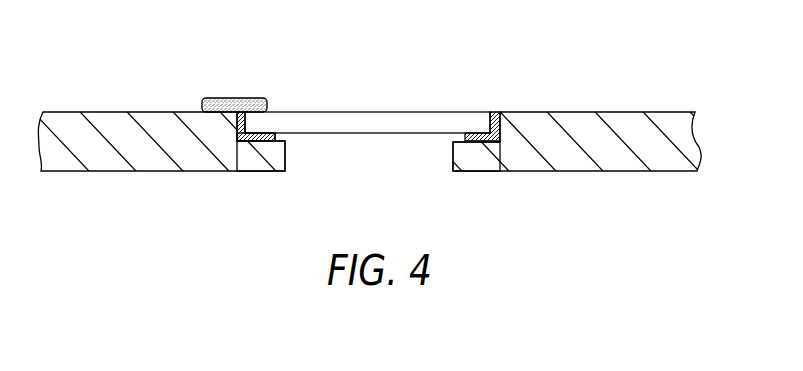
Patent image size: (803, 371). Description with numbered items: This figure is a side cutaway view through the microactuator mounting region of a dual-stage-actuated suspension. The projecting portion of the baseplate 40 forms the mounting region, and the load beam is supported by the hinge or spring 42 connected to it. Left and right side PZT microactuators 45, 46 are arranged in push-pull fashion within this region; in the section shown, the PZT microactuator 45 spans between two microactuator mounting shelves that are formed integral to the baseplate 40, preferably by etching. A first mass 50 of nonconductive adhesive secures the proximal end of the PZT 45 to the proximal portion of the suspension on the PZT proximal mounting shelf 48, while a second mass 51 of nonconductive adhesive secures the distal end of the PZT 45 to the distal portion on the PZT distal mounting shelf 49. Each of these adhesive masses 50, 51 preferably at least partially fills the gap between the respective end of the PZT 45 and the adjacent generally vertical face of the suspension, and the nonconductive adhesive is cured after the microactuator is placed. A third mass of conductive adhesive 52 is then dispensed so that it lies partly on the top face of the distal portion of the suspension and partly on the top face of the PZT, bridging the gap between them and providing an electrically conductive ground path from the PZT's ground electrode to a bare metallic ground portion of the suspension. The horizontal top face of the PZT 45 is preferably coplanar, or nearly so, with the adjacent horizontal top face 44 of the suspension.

The baseplate 40 is at (606, 88).
The hinge or spring 42 is at (110, 76).
The horizontal top face of the suspension 44 is at (527, 112).
The PZT microactuator 45 is at (367, 112).
The PZT microactuator 46 is at (213, 105).
The PZT proximal mounting shelf 48 is at (483, 141).
The PZT distal mounting shelf 49 is at (257, 141).
The first mass of nonconductive adhesive 50 is at (463, 138).
The second mass of nonconductive adhesive 51 is at (275, 135).
The conductive adhesive 52 is at (237, 106).